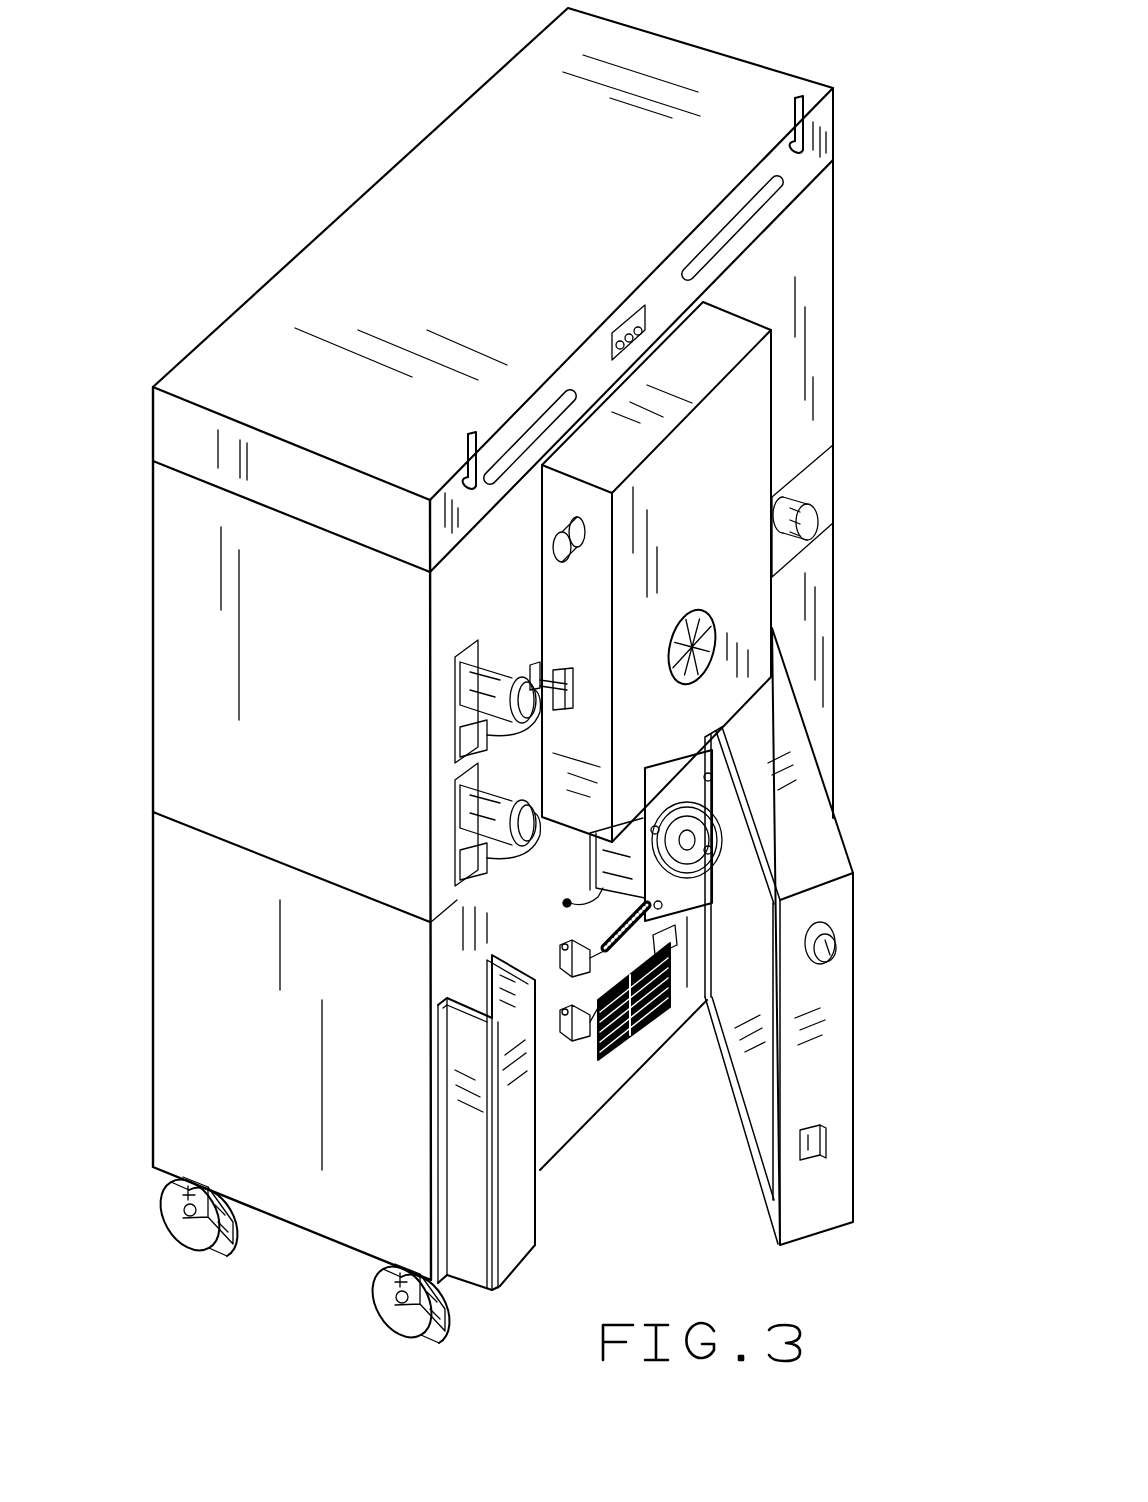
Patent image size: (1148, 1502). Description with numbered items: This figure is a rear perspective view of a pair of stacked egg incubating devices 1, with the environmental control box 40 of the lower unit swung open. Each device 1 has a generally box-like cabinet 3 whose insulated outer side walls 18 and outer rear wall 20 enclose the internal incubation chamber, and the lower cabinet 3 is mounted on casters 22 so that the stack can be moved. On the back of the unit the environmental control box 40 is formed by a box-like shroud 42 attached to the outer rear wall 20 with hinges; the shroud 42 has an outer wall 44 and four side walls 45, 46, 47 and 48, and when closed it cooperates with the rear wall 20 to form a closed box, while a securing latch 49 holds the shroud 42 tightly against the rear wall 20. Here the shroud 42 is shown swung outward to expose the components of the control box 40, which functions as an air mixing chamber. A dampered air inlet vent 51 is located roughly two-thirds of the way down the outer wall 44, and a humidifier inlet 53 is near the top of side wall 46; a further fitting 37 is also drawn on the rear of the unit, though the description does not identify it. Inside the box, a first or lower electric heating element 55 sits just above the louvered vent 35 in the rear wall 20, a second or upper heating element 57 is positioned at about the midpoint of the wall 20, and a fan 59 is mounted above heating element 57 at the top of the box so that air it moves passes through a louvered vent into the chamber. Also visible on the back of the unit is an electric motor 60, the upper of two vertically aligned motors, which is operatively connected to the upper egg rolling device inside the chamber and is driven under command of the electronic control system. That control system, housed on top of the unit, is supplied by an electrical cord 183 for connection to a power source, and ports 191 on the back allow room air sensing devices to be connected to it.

The egg incubating device 1 is at (130, 578).
The cabinet 3 is at (326, 232).
The outer side walls 18 is at (209, 668).
The outer rear wall 20 is at (808, 425).
The casters 22 is at (212, 1200).
The louvered vent 35 is at (627, 1037).
The socket 37 is at (815, 517).
The environmental control box 40 is at (798, 936).
The shroud 42 is at (748, 392).
The outer wall 44 is at (691, 508).
The side wall 45 is at (584, 452).
The side wall 46 is at (556, 660).
The side wall 47 is at (762, 1088).
The side wall 48 is at (726, 963).
The securing latch 49 is at (545, 668).
The dampered air inlet vent 51 is at (712, 640).
The humidifier inlet 53 is at (835, 953).
The first or lower electric heating element 55 is at (600, 1020).
The second or upper heating element 57 is at (583, 920).
The fan 59 is at (620, 857).
The electric motor 60 is at (743, 652).
The electrical cord 183 is at (805, 132).
The ports 191 is at (620, 308).